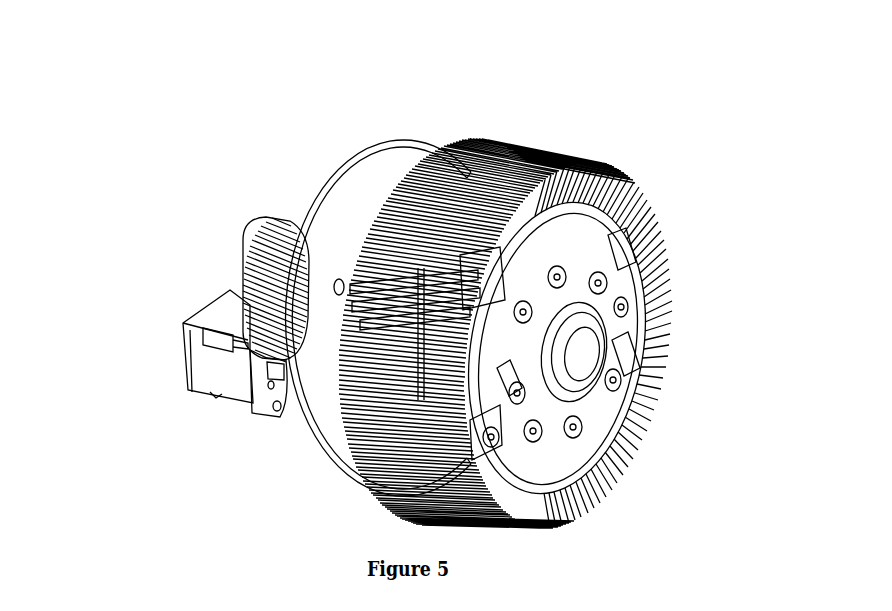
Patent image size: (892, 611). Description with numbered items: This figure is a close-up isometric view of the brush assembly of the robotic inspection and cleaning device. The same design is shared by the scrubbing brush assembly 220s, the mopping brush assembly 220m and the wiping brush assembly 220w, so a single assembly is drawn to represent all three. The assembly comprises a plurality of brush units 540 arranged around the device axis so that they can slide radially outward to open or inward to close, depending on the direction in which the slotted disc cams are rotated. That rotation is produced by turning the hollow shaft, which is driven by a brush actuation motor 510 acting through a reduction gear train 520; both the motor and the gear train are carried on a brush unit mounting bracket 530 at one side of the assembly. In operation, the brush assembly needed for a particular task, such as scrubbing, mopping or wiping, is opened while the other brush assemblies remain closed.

The scrubbing brush assembly 220s is at (298, 70).
The mopping brush assembly 220m is at (391, 287).
The wiping brush assembly 220w is at (391, 287).
The brush actuation motor 510 is at (200, 318).
The reduction gear train 520 is at (262, 245).
The brush unit mounting bracket 530 is at (356, 163).
The brush units 540 is at (529, 106).